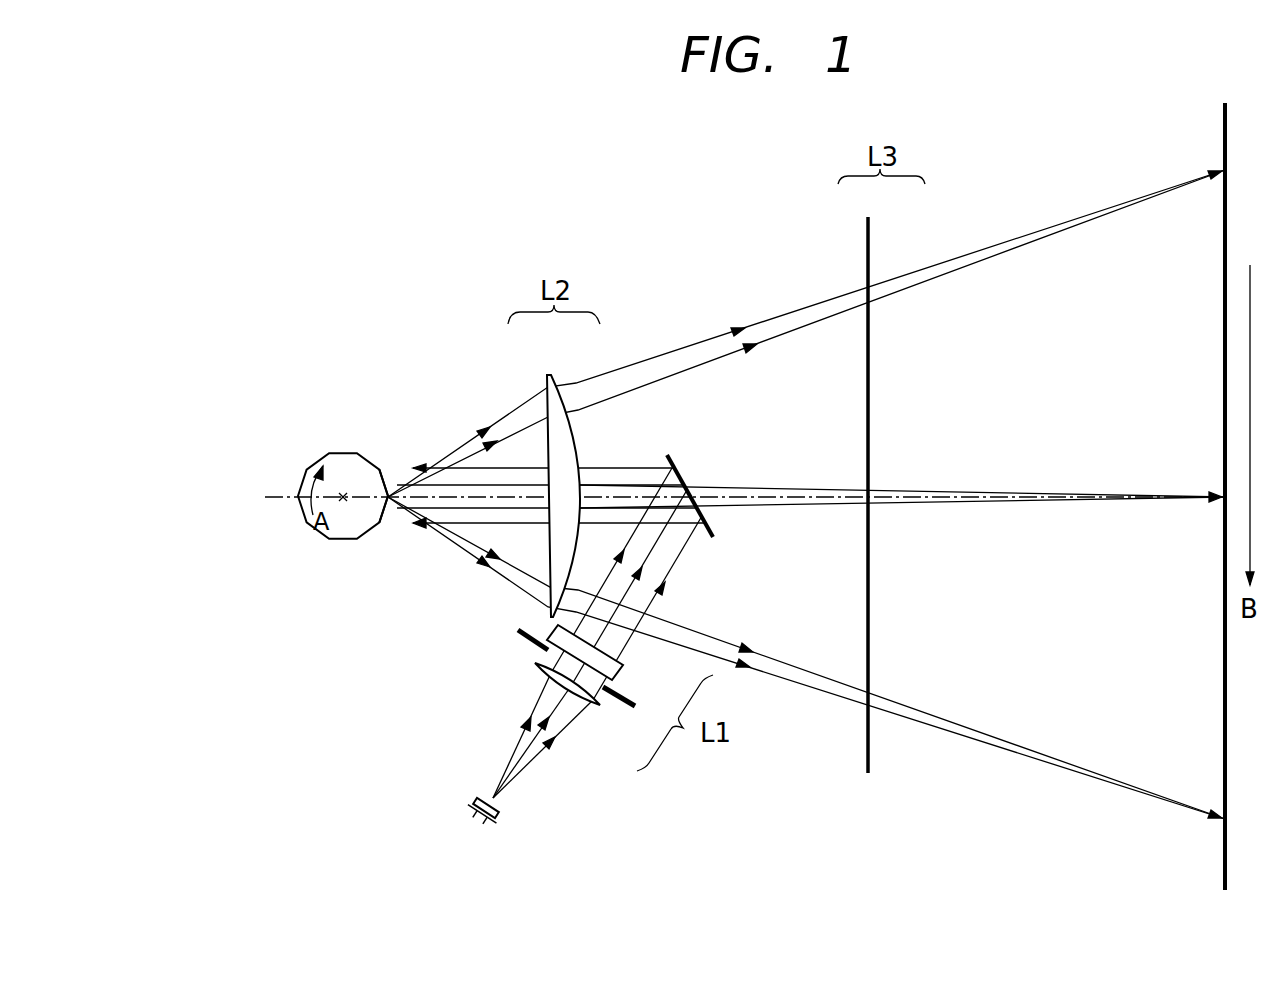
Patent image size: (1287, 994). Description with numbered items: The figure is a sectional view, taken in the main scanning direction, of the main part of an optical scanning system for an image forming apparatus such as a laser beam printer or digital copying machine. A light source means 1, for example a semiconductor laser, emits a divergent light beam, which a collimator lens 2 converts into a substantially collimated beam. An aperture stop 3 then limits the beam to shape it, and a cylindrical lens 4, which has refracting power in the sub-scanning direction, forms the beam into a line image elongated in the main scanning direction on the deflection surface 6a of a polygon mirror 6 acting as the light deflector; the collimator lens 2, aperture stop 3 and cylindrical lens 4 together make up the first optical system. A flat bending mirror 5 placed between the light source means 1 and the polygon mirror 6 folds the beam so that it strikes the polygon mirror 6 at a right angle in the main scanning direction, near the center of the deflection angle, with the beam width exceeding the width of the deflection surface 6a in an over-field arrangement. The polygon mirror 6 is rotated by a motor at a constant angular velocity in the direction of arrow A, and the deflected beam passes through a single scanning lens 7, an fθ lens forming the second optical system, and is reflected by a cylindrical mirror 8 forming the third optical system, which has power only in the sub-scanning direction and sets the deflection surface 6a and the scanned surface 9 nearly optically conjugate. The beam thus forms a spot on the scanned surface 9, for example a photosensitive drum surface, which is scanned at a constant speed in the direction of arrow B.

The light source means 1 is at (498, 812).
The collimator lens 2 is at (602, 706).
The aperture stop 3 is at (637, 705).
The cylindrical lens 4 is at (625, 668).
The bending mirror 5 is at (682, 468).
The polygon mirror 6 is at (322, 457).
The deflection surface 6a is at (388, 477).
The scanning lens 7 is at (553, 374).
The cylindrical mirror 8 is at (871, 255).
The scanned surface 9 is at (1229, 150).